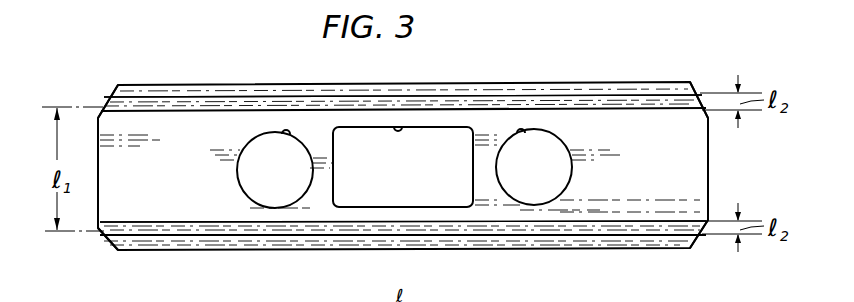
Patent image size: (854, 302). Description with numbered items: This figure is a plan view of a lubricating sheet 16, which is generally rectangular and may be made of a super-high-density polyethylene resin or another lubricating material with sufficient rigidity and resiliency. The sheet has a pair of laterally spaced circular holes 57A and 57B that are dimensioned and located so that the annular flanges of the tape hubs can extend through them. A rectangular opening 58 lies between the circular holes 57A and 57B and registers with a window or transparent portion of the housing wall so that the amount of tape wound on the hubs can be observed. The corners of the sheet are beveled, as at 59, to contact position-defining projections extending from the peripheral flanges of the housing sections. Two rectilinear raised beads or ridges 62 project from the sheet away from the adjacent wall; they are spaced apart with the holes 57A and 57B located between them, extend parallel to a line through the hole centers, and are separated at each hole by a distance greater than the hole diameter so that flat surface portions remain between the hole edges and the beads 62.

The lubricating sheet 16 is at (621, 80).
The circular hole 57A is at (287, 133).
The circular hole 57B is at (521, 131).
The rectangular opening 58 is at (398, 126).
The beveled corner 59 is at (112, 97).
The raised bead or ridge 62 is at (190, 104).